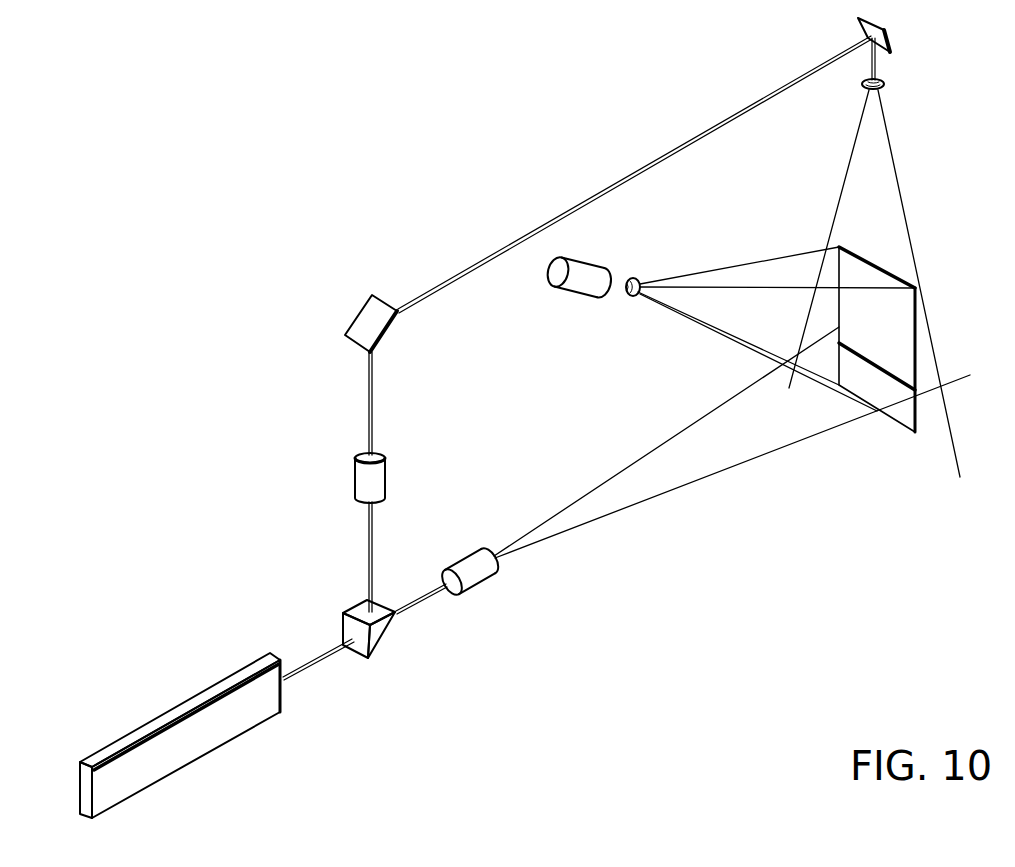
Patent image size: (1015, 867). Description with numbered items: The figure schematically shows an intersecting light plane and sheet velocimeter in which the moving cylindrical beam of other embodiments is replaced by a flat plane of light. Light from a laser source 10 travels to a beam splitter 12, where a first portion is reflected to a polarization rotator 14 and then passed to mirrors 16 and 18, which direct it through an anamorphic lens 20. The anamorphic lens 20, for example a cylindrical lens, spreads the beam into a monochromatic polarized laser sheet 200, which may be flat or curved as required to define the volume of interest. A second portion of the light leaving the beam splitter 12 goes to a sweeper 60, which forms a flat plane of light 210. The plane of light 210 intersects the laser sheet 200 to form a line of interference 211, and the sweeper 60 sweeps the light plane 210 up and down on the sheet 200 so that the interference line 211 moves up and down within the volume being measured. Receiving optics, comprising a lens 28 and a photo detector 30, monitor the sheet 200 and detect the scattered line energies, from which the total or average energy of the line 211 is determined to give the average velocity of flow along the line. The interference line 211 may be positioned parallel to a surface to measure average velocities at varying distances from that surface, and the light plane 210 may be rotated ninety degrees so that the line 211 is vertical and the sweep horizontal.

The laser source 10 is at (217, 683).
The beam splitter 12 is at (354, 604).
The polarization rotator 14 is at (355, 470).
The mirror 16 is at (362, 313).
The mirror 18 is at (888, 41).
The anamorphic lens 20 is at (885, 80).
The lens 28 is at (648, 307).
The photo detector 30 is at (578, 292).
The sweeper 60 is at (477, 590).
The laser sheet 200 is at (915, 327).
The plane of light 210 is at (722, 471).
The line of interference 211 is at (900, 380).